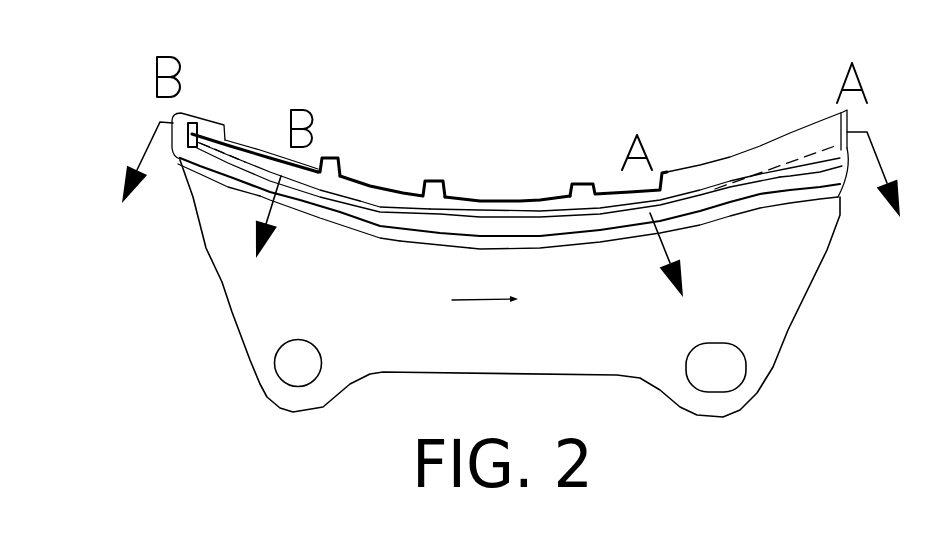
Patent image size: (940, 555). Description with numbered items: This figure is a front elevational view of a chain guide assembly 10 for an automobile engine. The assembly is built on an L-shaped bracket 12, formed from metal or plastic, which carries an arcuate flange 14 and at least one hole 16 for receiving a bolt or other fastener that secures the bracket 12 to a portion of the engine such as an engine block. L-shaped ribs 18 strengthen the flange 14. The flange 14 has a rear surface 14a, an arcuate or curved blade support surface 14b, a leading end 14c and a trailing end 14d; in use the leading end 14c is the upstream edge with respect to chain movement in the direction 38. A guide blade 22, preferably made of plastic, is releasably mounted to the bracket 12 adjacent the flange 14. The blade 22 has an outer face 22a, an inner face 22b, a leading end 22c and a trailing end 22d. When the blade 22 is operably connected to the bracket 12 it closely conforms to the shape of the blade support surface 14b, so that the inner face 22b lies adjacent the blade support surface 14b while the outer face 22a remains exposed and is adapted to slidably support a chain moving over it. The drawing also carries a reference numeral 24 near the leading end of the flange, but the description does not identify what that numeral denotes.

The chain guide assembly 10 is at (462, 228).
The L-shaped bracket 12 is at (500, 301).
The arcuate flange 14 is at (510, 133).
The rear surface 14a is at (507, 136).
The blade support surface 14b is at (540, 191).
The leading end 14c is at (245, 93).
The trailing end 14d is at (757, 133).
The hole 16 is at (296, 380).
The L-shaped ribs 18 is at (349, 127).
The guide blade 22 is at (519, 210).
The outer face 22a is at (422, 269).
The inner face 22b is at (395, 166).
The leading end 22c is at (210, 193).
The trailing end 22d is at (828, 222).
The curled end 24 is at (198, 86).
The direction 38 is at (477, 319).